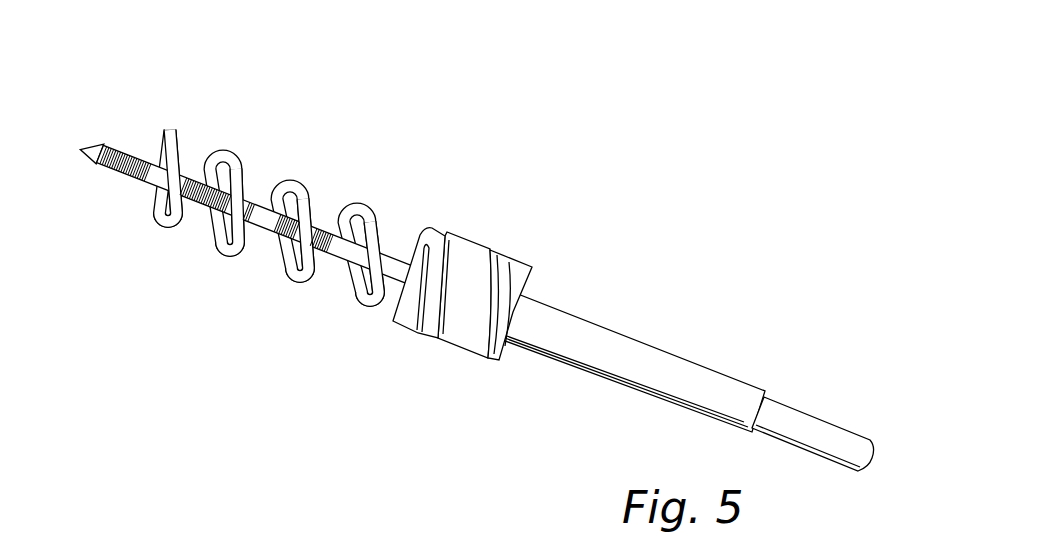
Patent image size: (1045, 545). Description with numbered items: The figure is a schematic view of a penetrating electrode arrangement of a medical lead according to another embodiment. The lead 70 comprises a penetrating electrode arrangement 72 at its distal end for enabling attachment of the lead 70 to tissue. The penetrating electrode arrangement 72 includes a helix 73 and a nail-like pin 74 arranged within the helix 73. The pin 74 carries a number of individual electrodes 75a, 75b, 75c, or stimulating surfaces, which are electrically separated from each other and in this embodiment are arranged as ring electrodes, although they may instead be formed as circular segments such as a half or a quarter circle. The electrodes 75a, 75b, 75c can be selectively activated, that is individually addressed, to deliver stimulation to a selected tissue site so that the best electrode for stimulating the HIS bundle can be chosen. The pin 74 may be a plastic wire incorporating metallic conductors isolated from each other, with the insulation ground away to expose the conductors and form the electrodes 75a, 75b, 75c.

The lead 70 is at (622, 340).
The penetrating electrode arrangement 72 is at (332, 178).
The helix 73 is at (433, 232).
The nail-like pin 74 is at (389, 252).
The electrode 75a is at (118, 143).
The electrode 75b is at (196, 178).
The electrode 75c is at (312, 282).